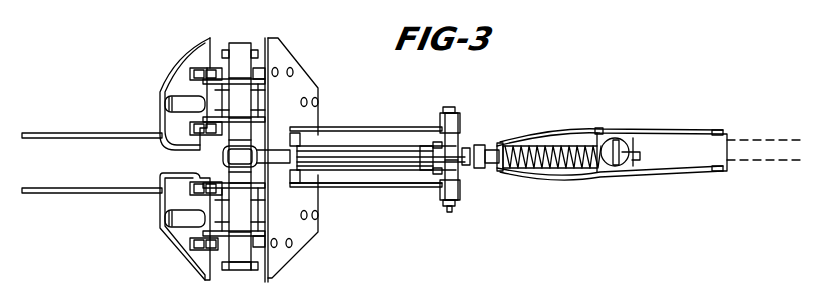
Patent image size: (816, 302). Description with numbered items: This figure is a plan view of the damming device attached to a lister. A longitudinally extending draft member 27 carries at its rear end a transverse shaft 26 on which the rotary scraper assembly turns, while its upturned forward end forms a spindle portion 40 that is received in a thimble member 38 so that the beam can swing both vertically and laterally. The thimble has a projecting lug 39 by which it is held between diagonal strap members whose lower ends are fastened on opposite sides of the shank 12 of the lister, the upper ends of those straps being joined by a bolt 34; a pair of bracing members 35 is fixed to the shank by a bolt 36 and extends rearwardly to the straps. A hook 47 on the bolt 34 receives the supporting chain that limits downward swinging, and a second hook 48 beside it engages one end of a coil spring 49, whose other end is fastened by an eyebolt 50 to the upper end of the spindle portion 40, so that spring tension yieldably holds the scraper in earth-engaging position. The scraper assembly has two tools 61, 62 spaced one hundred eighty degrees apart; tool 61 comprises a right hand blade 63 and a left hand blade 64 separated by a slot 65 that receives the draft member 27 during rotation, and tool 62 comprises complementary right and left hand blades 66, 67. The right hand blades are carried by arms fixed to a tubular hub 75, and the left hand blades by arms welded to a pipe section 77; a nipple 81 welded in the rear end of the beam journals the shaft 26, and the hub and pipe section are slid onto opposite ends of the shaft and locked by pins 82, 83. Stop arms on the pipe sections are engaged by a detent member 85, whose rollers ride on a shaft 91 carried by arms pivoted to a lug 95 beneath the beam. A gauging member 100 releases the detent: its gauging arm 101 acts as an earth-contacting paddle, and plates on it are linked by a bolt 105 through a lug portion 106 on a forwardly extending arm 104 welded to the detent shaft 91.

The shank 12 is at (740, 162).
The transverse shaft 26 is at (244, 60).
The draft member 27 is at (278, 138).
The bolt 34 is at (496, 172).
The bracing members 35 is at (651, 140).
The bolt 36 is at (722, 130).
The thimble member 38 is at (620, 140).
The projecting lug 39 is at (598, 132).
The spindle portion 40 is at (615, 165).
The hook 47 is at (490, 163).
The second hook 48 is at (482, 146).
The coil spring 49 is at (519, 168).
The eyebolt 50 is at (633, 160).
The scraper tool 61 is at (152, 260).
The scraper tool 62 is at (330, 248).
The right hand blade 63 is at (173, 202).
The left hand blade 64 is at (178, 80).
The slot 65 is at (175, 156).
The right hand blade 66 is at (300, 252).
The left hand blade 67 is at (296, 80).
The tubular hub 75 is at (238, 266).
The pipe section 77 is at (236, 55).
The nipple 81 is at (222, 157).
The pin 82 is at (256, 52).
The pin 83 is at (255, 268).
The detent member 85 is at (453, 112).
The shaft 91 is at (449, 212).
The lug 95 is at (468, 148).
The gauging member 100 is at (381, 168).
The gauging arm 101 is at (425, 145).
The arm 104 is at (372, 163).
The bolt 105 is at (296, 136).
The lug portion 106 is at (296, 183).